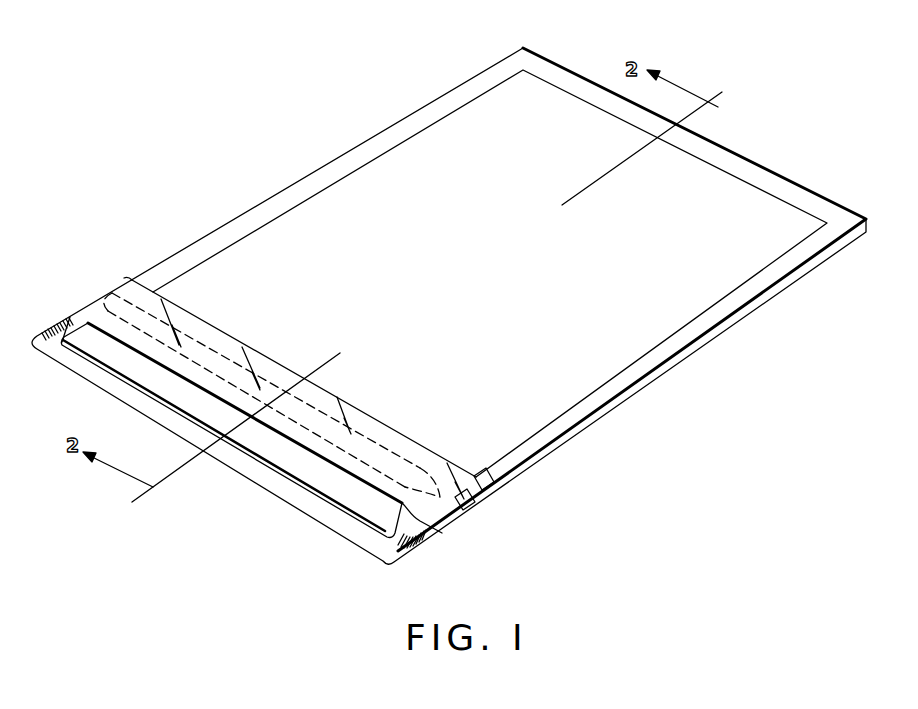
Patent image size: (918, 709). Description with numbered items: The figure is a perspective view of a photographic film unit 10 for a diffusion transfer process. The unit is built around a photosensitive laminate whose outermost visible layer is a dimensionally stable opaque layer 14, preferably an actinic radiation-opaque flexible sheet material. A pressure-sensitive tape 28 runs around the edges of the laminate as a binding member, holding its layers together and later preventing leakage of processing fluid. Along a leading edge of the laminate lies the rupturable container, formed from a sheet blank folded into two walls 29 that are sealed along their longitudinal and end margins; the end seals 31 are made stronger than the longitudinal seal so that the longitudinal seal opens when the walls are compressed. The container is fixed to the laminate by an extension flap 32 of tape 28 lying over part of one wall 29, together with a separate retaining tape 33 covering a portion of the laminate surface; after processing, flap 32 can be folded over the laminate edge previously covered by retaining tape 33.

The film unit 10 is at (196, 229).
The dimensionally stable opaque layer 14 is at (440, 153).
The pressure-sensitive tape 28 is at (317, 186).
The walls 29 is at (102, 348).
The end seals 31 is at (55, 342).
The extension flap 32 is at (468, 520).
The retaining tape 33 is at (477, 478).